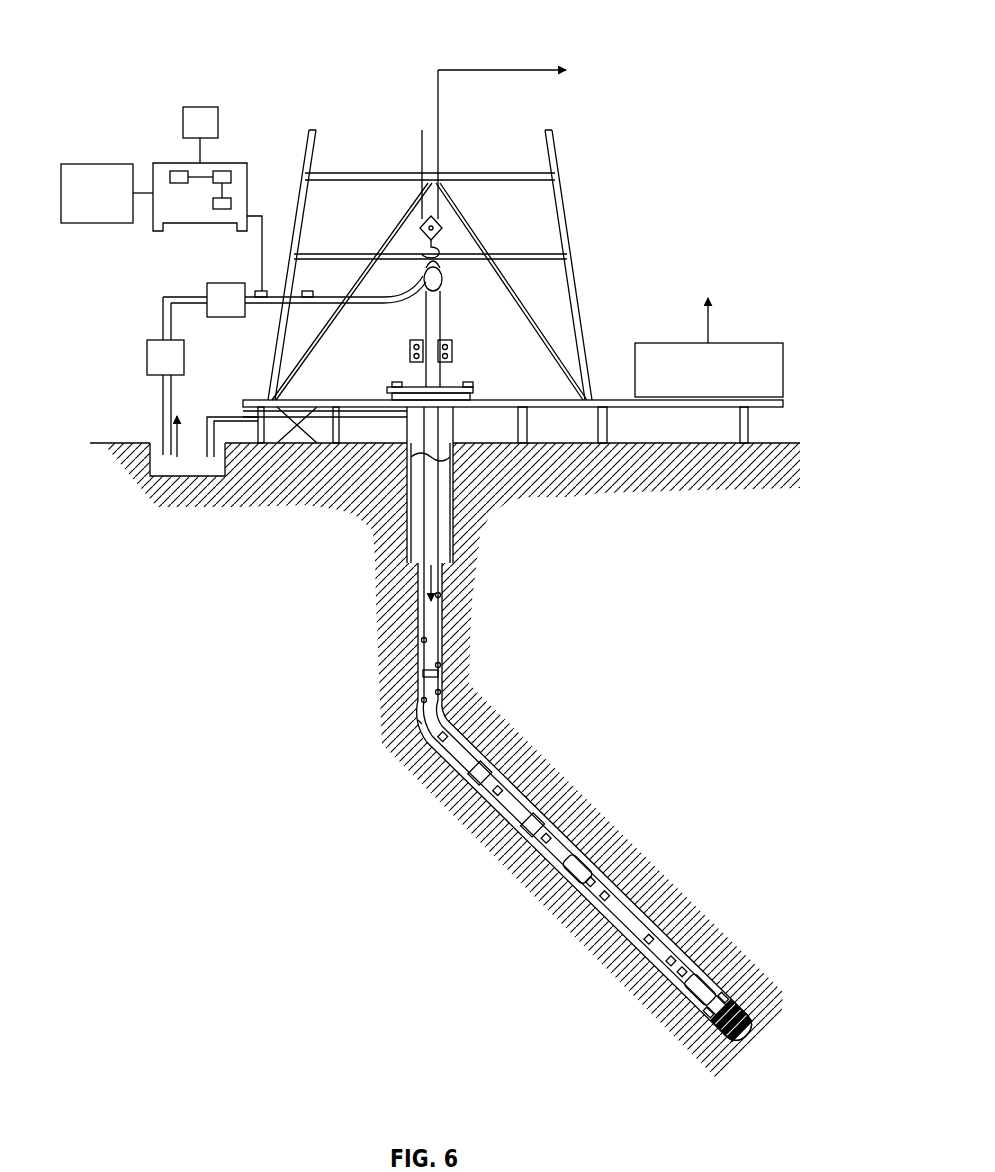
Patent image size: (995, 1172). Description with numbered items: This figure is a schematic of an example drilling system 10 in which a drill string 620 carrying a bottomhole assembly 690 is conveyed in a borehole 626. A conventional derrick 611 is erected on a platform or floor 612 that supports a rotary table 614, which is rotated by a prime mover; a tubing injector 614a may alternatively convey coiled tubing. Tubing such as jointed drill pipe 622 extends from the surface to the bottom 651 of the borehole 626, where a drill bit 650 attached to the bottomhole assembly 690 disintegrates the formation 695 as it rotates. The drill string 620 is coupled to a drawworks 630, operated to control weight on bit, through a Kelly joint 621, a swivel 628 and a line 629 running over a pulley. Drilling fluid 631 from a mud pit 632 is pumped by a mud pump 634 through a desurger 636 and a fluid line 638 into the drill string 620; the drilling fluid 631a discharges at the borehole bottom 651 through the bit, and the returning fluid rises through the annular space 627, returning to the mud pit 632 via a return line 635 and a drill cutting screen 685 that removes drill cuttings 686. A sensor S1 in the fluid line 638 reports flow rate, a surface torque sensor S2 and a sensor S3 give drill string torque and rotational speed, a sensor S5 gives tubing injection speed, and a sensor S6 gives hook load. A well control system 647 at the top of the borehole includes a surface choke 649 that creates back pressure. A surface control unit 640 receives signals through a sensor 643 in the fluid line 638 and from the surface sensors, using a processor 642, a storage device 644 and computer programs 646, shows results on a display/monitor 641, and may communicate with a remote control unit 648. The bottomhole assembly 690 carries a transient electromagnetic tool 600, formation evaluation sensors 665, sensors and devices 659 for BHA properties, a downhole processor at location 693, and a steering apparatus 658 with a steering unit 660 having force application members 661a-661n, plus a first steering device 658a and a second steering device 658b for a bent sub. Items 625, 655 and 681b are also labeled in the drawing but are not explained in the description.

The drilling system 10 is at (706, 117).
The tool 600 is at (145, 40).
The derrick 611 is at (573, 268).
The platform or floor 612 is at (593, 398).
The rotary table 614 is at (448, 385).
The tubing injector 614a is at (453, 351).
The drill string 620 is at (448, 618).
The Kelly joint 621 is at (440, 326).
The jointed drill pipe 622 is at (418, 638).
The wellhead 625 is at (481, 400).
The borehole 626 is at (447, 697).
The annular space 627 is at (467, 747).
The swivel 628 is at (421, 289).
The line 629 is at (440, 157).
The drawworks 630 is at (728, 343).
The drilling fluid 631 is at (156, 441).
The drilling fluid from the drilling tubular 631a is at (418, 590).
The mud pit 632 is at (184, 472).
The mud pump 634 is at (147, 355).
The return line 635 is at (357, 420).
The desurger 636 is at (206, 292).
The fluid line 638 is at (272, 306).
The surface control unit 640 is at (184, 163).
The display/monitor 641 is at (202, 107).
The processor 642 is at (184, 170).
The sensor 643 is at (259, 290).
The storage device 644 is at (223, 170).
The computer programs 646 is at (225, 210).
The well control system 647 is at (397, 357).
The remote control unit 648 is at (107, 224).
The surface choke 649 is at (471, 443).
The drill bit 650 is at (753, 1002).
The bottom of the borehole 651 is at (717, 1062).
The bottom hole assembly 655 is at (527, 800).
The steering apparatus 658 is at (703, 968).
The first steering device 658a is at (703, 1018).
The second steering device 658b is at (700, 1012).
The sensors and devices 659 is at (727, 984).
The steering unit 660 is at (682, 998).
The force application members 661a-661n is at (700, 978).
The formation evaluation sensors 665 is at (605, 929).
The casing shoe 681b is at (420, 727).
The drill cutting screen 685 is at (257, 491).
The drill cuttings 686 is at (455, 585).
The bottomhole assembly 690 is at (657, 774).
The downhole processor location 693 is at (540, 898).
The formation 695 is at (687, 820).
The sensor S1 is at (309, 292).
The surface torque sensor S2 is at (479, 390).
The sensor S3 is at (395, 383).
The sensor S5 is at (442, 282).
The sensor S6 is at (440, 265).